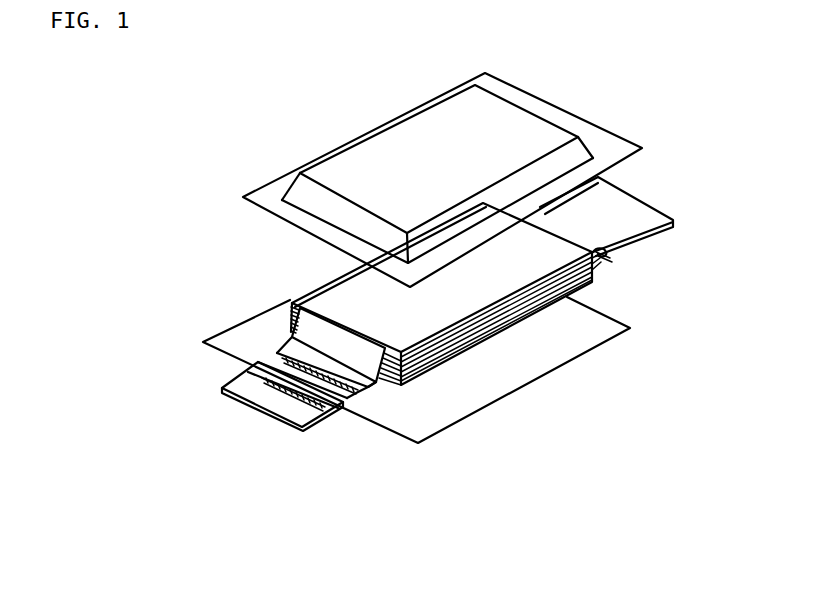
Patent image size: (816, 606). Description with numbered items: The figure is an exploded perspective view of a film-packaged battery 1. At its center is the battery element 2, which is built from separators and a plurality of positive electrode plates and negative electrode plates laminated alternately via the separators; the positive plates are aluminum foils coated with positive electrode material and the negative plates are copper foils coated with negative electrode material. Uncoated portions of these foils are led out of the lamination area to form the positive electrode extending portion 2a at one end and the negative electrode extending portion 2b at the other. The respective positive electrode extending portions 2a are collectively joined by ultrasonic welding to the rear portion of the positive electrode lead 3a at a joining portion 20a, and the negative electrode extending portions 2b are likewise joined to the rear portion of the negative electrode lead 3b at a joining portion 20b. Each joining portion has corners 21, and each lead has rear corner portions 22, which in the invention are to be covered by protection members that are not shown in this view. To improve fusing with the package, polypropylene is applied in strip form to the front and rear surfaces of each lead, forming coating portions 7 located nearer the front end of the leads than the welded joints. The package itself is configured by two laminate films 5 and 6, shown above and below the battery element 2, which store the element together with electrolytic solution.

The film-packaged battery 1 is at (248, 136).
The battery element 2 is at (548, 300).
The positive electrode extending portion 2a is at (380, 383).
The negative electrode extending portion 2b is at (600, 275).
The positive electrode lead 3a is at (282, 402).
The negative electrode lead 3b is at (635, 222).
The laminate film 5 is at (547, 113).
The laminate film 6 is at (480, 397).
The coating portion 7 is at (265, 373).
The joining portion 20a is at (290, 338).
The joining portion 20b is at (603, 254).
The corners of joining portion 21 is at (273, 350).
The rear corner portions 22 is at (384, 388).